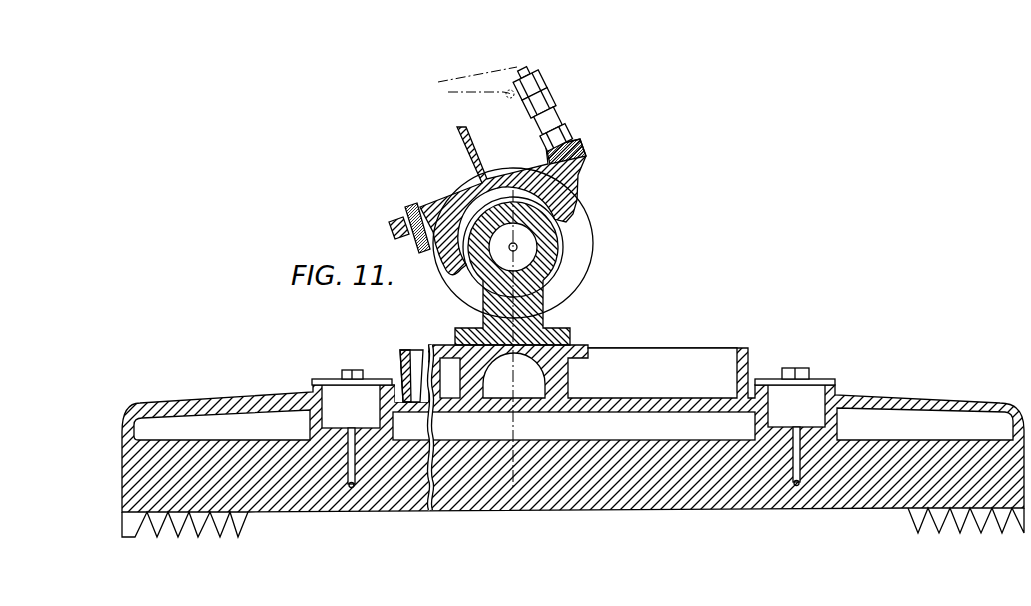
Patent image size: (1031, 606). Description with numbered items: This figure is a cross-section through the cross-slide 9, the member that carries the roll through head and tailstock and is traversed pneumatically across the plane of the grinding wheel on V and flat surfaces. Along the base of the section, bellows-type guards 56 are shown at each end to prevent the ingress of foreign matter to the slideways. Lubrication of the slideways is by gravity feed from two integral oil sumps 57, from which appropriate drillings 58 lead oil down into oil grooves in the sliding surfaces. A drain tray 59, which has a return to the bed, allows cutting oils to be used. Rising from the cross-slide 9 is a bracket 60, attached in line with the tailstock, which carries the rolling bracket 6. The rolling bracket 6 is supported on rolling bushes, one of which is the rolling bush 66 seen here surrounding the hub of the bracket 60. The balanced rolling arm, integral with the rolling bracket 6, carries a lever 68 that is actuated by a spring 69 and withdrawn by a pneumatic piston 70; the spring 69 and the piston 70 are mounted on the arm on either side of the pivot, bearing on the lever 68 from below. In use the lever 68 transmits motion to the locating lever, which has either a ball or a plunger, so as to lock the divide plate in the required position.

The rolling bracket 6 is at (563, 202).
The cross-slide 9 is at (596, 488).
The bellows-type guards 56 is at (235, 515).
The oil sumps 57 is at (573, 398).
The drillings 58 is at (353, 486).
The drain tray 59 is at (652, 373).
The bracket 60 is at (527, 305).
The rolling bush 66 is at (560, 267).
The lever 68 is at (393, 100).
The spring 69 is at (385, 183).
The pneumatic piston 70 is at (552, 122).